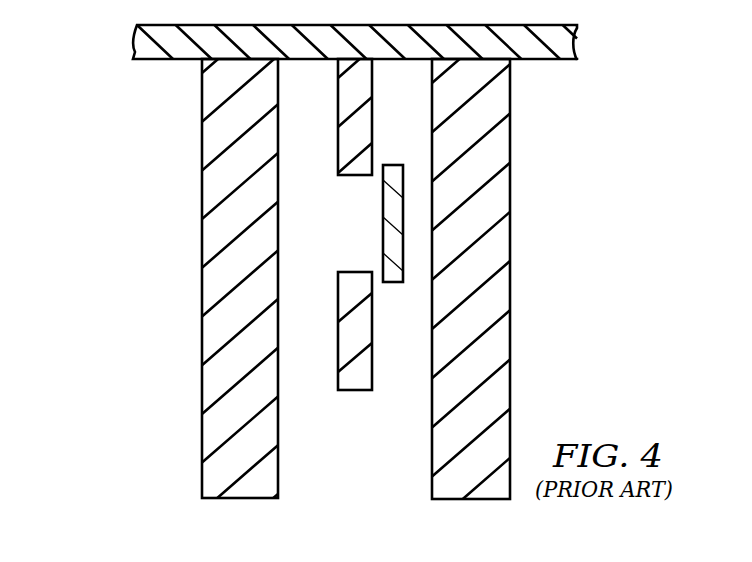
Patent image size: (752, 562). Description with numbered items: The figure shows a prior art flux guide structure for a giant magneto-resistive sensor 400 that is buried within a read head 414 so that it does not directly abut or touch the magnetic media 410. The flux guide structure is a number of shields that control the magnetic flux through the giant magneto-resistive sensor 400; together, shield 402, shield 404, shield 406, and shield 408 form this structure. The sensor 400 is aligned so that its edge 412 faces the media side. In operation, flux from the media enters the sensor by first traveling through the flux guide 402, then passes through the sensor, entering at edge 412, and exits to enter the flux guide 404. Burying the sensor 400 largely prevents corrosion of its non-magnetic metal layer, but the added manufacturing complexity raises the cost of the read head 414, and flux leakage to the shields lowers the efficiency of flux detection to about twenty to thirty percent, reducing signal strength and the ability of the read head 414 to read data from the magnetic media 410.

The giant magneto-resistive sensor 400 is at (383, 237).
The shield 402 is at (338, 97).
The shield 404 is at (352, 391).
The shield 406 is at (202, 295).
The shield 408 is at (510, 288).
The magnetic media 410 is at (132, 40).
The edge 412 is at (392, 165).
The read head 414 is at (563, 165).